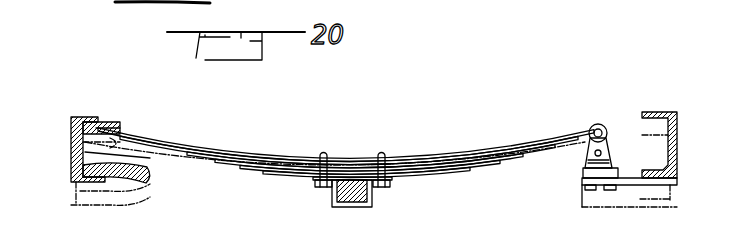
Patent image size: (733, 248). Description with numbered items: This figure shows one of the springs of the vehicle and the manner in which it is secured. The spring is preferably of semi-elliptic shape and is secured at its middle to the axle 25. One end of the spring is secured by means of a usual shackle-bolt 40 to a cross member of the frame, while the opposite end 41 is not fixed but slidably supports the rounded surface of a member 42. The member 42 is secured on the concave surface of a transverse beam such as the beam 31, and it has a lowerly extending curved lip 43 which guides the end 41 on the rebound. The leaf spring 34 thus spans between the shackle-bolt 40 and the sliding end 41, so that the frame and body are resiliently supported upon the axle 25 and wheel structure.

The transverse beam 31 is at (69, 144).
The member 42 is at (123, 126).
The opposite end 41 is at (138, 137).
The curved lip 43 is at (147, 183).
The leaf spring 34 is at (472, 150).
The axle 25 is at (347, 189).
The shackle-bolt 40 is at (611, 99).